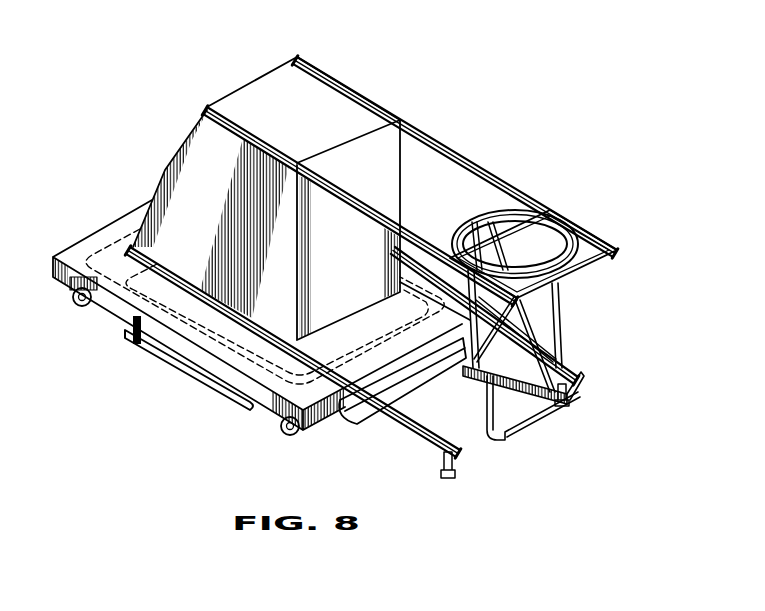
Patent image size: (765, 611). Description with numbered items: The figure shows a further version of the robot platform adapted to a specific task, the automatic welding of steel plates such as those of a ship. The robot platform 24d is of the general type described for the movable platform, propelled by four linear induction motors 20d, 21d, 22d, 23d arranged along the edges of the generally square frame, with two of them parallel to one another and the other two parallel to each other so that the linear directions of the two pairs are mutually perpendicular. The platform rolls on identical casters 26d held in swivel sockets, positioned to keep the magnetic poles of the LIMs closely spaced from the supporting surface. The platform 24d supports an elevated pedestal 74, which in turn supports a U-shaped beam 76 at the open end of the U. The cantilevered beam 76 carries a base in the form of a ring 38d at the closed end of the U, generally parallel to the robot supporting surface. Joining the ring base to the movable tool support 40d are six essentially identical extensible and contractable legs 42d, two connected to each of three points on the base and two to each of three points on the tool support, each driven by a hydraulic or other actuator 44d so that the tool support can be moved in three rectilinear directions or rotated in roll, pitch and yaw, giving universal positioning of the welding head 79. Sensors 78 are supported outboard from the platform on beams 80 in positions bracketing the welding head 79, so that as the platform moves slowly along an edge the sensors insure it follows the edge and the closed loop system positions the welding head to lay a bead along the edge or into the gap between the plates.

The linear induction motor 20d is at (406, 388).
The linear induction motor 21d is at (113, 226).
The linear induction motor 22d is at (407, 320).
The linear induction motor 23d is at (218, 383).
The robot platform 24d is at (136, 346).
The caster 26d is at (93, 306).
The ring base 38d is at (468, 232).
The movable tool support 40d is at (520, 385).
The extensible leg 42d is at (560, 349).
The actuator 44d is at (505, 256).
The elevated pedestal 74 is at (267, 107).
The U-shaped beam 76 is at (411, 124).
The sensor 78 is at (569, 396).
The welding head 79 is at (512, 440).
The sensor beam 80 is at (571, 378).